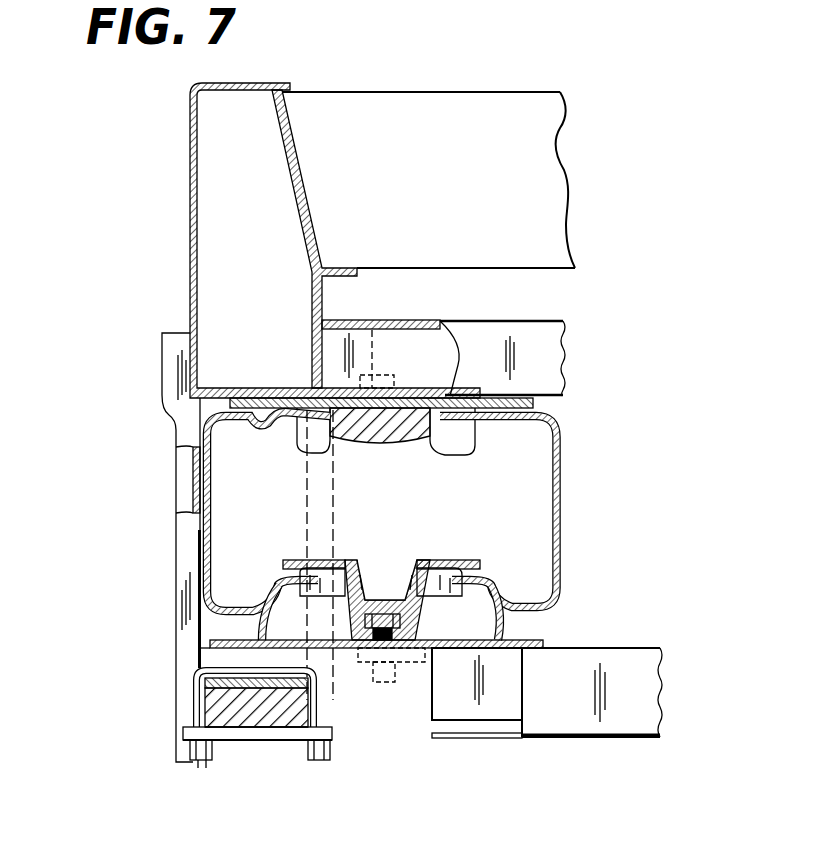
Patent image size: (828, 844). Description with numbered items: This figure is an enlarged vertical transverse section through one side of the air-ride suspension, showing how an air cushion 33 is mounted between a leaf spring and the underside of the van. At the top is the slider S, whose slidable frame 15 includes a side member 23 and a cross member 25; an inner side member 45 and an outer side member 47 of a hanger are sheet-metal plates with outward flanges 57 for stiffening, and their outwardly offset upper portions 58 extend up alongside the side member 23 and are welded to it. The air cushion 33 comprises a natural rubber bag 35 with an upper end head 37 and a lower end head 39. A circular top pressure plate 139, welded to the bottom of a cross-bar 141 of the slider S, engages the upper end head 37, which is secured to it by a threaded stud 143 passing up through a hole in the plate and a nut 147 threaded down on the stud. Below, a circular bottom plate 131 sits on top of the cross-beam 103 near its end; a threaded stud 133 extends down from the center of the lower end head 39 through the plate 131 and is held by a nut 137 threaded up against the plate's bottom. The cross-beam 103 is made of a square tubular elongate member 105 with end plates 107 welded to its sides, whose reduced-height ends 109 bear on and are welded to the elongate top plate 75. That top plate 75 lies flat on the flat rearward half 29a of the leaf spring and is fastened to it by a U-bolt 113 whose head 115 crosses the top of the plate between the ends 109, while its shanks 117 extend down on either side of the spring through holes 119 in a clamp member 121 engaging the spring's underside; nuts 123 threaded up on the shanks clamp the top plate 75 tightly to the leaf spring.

The slider S is at (181, 107).
The frame 15 is at (478, 91).
The side member 23 is at (190, 148).
The cross member 25 is at (540, 186).
The air cushion 33 is at (573, 437).
The natural rubber bag 35 is at (560, 512).
The upper end head 37 is at (455, 453).
The lower end head 39 is at (470, 530).
The inner side member 45 is at (337, 752).
The outer side member 47 is at (176, 762).
The outward flange 57 is at (176, 544).
The upper portion of side plate 58 is at (166, 344).
The elongate top plate 75 is at (206, 692).
The rearward half of leaf spring 29a is at (195, 712).
The cross-beam 103 is at (624, 748).
The elongate member 105 is at (640, 655).
The end plate 107 is at (500, 722).
The reduced-height end 109 is at (204, 655).
The U-bolt 113 is at (187, 672).
The head of U-bolt 115 is at (264, 639).
The shanks of U-bolt 117 is at (198, 762).
The holes 119 is at (183, 737).
The clamp member 121 is at (284, 742).
The nuts 123 is at (210, 748).
The circular bottom plate 131 is at (545, 637).
The threaded stud 133 is at (318, 672).
The nut 137 is at (436, 625).
The circular top pressure plate 139 is at (540, 405).
The cross-bar 141 is at (548, 352).
The threaded stud 143 is at (372, 334).
The nut 147 is at (393, 383).